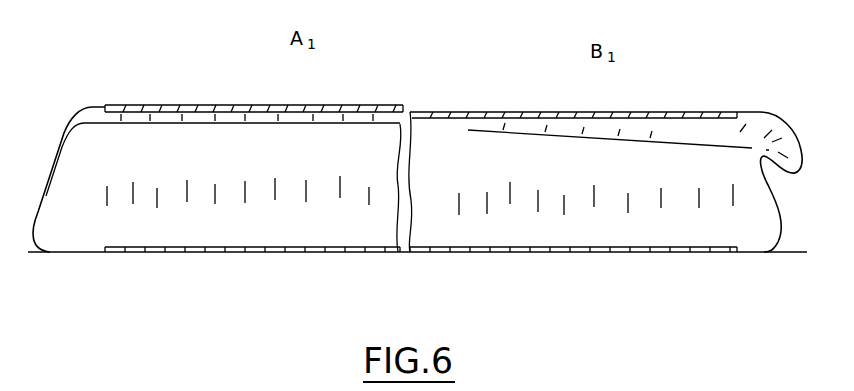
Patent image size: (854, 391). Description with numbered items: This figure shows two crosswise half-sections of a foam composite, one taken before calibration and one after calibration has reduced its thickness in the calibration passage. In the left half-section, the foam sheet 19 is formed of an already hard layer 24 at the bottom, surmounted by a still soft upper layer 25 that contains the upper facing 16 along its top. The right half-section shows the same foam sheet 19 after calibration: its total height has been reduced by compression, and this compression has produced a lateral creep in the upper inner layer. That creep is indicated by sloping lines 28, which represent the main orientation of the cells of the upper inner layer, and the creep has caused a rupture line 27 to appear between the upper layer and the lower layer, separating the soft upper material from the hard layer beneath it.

The upper facing 16 is at (327, 104).
The upper layer 25 is at (203, 118).
The hard layer 24 is at (172, 240).
The foam sheet 19 is at (550, 228).
The rupture line 27 is at (639, 135).
The sloping lines 28 is at (690, 131).